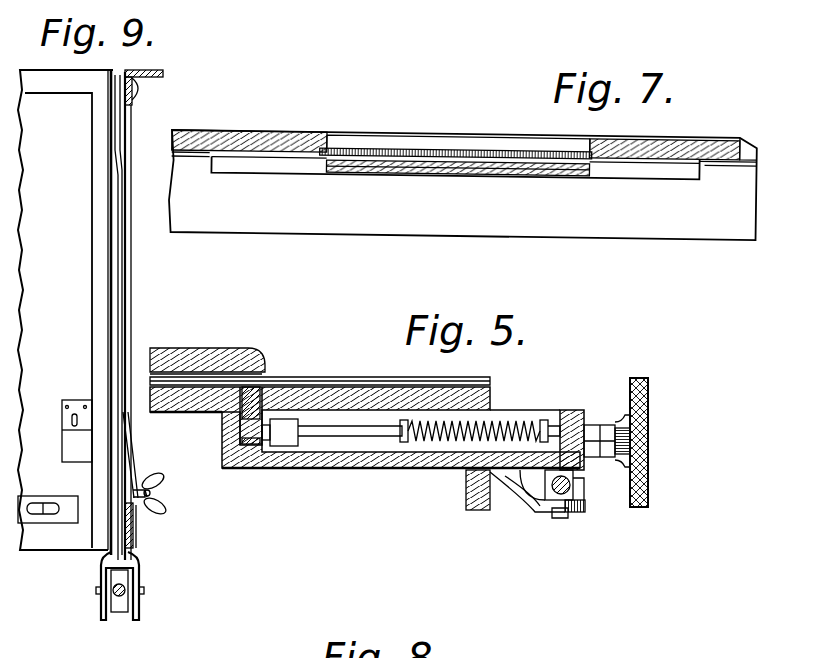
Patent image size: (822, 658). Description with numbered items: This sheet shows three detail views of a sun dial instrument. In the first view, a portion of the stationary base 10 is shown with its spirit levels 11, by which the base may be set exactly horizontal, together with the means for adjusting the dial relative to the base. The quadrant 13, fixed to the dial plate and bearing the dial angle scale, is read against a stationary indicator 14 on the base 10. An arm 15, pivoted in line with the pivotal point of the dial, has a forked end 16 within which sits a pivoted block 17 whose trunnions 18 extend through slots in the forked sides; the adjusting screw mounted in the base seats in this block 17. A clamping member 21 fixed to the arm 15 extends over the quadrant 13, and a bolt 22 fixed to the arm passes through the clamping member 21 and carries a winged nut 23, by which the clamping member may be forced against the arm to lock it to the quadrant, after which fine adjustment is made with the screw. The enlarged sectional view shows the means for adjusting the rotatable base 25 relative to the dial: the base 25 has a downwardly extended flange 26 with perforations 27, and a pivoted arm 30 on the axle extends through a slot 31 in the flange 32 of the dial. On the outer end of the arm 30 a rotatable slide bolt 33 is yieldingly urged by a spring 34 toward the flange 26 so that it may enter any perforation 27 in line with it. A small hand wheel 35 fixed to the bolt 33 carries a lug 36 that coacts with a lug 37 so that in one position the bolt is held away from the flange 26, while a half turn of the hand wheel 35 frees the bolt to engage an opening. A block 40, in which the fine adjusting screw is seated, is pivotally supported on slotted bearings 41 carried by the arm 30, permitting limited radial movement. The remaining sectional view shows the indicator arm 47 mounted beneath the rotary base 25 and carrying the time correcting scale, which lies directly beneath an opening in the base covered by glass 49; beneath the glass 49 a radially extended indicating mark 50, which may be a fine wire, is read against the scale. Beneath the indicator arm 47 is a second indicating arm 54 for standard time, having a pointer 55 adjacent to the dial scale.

In FIG. 9, the stationary base 10 is at (48, 545).
In FIG. 9, the spirit levels 11 is at (66, 443).
In FIG. 9, the quadrant 13 is at (127, 262).
In FIG. 9, the stationary indicator 14 is at (138, 547).
In FIG. 9, the arm 15 is at (118, 292).
In FIG. 9, the forked end 16 is at (141, 575).
In FIG. 9, the pivoted block 17 is at (118, 614).
In FIG. 9, the trunnions 18 is at (96, 592).
In FIG. 9, the clamping member 21 is at (131, 443).
In FIG. 9, the bolt 22 is at (160, 496).
In FIG. 9, the winged nut 23 is at (152, 489).
In FIG. 7, the rotatable base 25 is at (660, 138).
In FIG. 5, the rotatable base 25 is at (182, 356).
In FIG. 5, the downwardly extended flange 26 is at (262, 390).
In FIG. 5, the perforations 27 is at (240, 432).
In FIG. 5, the pivoted arm 30 is at (392, 470).
In FIG. 5, the slot 31 is at (465, 472).
In FIG. 5, the flange 32 is at (477, 510).
In FIG. 5, the slide bolt 33 is at (312, 430).
In FIG. 5, the spring 34 is at (510, 428).
In FIG. 5, the hand wheel 35 is at (650, 404).
In FIG. 5, the lug 36 is at (607, 428).
In FIG. 5, the lug 37 is at (590, 428).
In FIG. 5, the block 40 is at (578, 493).
In FIG. 5, the bearings 41 is at (537, 514).
In FIG. 7, the indicator arm 47 is at (480, 150).
In FIG. 5, the indicator arm 47 is at (486, 381).
In FIG. 7, the glass 49 is at (340, 148).
In FIG. 7, the indicating mark 50 is at (452, 172).
In FIG. 7, the second indicating arm 54 is at (392, 170).
In FIG. 5, the pointer 55 is at (378, 386).